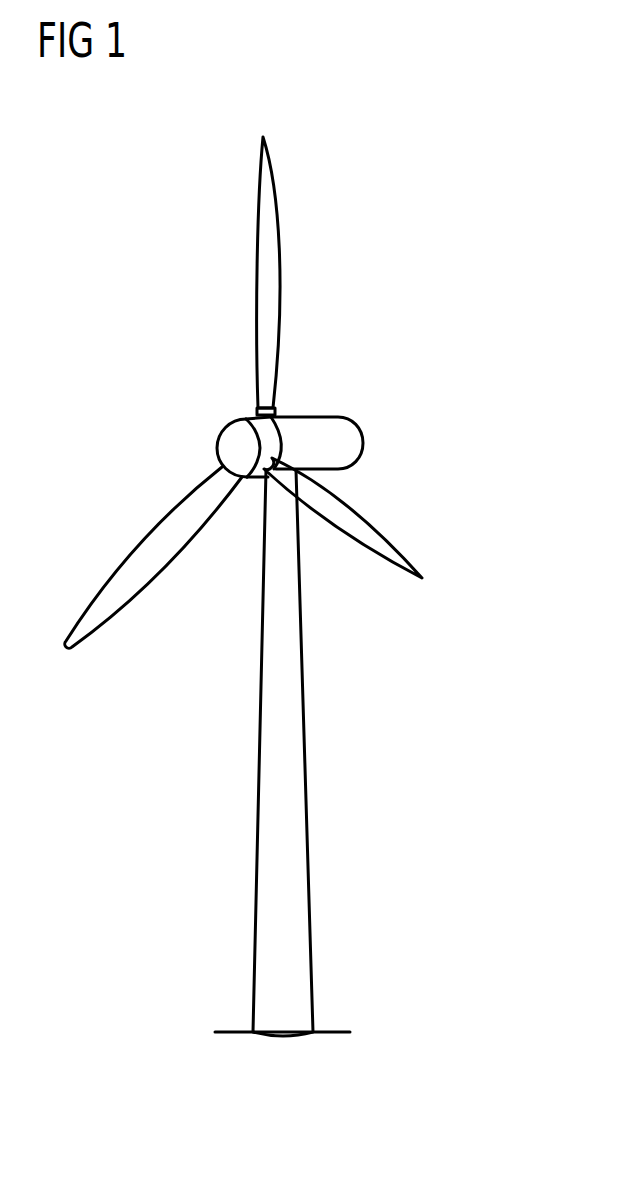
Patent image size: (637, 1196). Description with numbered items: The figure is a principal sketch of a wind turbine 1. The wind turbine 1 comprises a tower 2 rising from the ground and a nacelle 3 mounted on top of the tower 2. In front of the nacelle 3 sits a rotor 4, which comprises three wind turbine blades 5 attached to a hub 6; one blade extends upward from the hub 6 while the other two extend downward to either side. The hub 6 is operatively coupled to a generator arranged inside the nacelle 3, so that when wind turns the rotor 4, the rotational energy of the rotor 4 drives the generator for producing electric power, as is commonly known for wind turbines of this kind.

The wind turbine 1 is at (446, 337).
The tower 2 is at (297, 830).
The nacelle 3 is at (352, 448).
The rotor 4 is at (215, 416).
The wind turbine blade 5 is at (272, 232).
The hub 6 is at (230, 443).